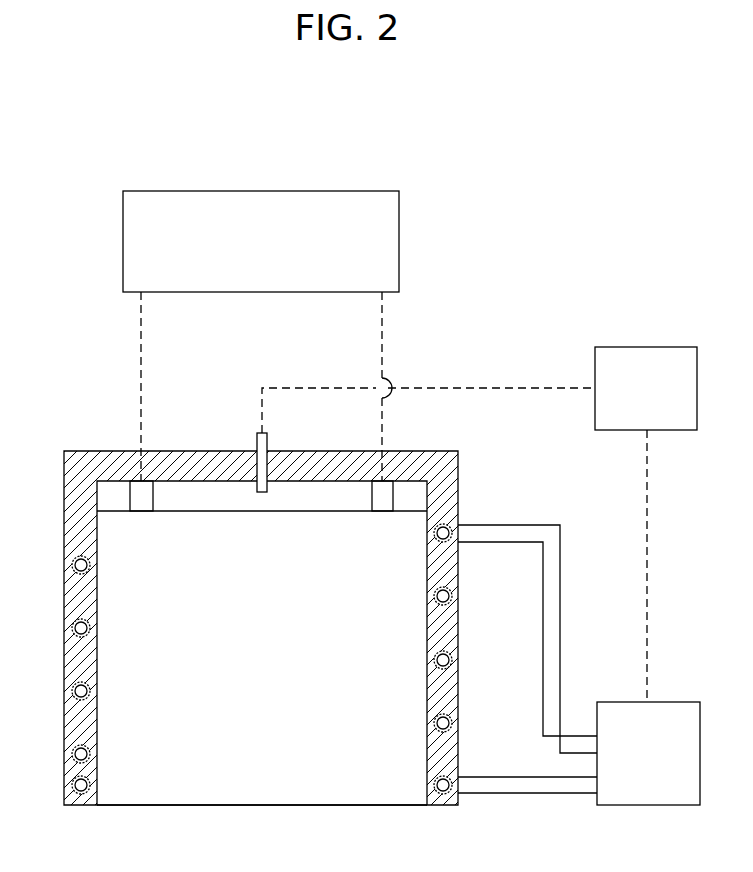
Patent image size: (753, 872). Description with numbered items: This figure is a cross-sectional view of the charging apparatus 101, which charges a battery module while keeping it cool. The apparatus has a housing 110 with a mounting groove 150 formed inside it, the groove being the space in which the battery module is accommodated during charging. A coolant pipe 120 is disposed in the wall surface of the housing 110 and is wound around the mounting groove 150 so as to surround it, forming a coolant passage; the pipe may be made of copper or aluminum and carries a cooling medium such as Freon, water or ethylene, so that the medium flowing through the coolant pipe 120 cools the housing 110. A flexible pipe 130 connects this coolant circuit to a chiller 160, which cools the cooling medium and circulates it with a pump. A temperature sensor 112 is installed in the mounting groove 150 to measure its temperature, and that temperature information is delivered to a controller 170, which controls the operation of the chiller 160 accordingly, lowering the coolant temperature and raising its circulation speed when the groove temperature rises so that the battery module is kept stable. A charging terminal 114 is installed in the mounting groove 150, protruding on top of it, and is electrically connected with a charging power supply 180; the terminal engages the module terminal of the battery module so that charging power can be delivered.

The charging apparatus 101 is at (60, 360).
The housing 110 is at (458, 468).
The temperature sensor 112 is at (256, 489).
The charging terminal 114 is at (162, 496).
The coolant pipe 120 is at (438, 801).
The flexible pipe 130 is at (560, 615).
The mounting groove 150 is at (278, 774).
The chiller 160 is at (650, 808).
The controller 170 is at (645, 347).
The charging power supply 180 is at (399, 240).